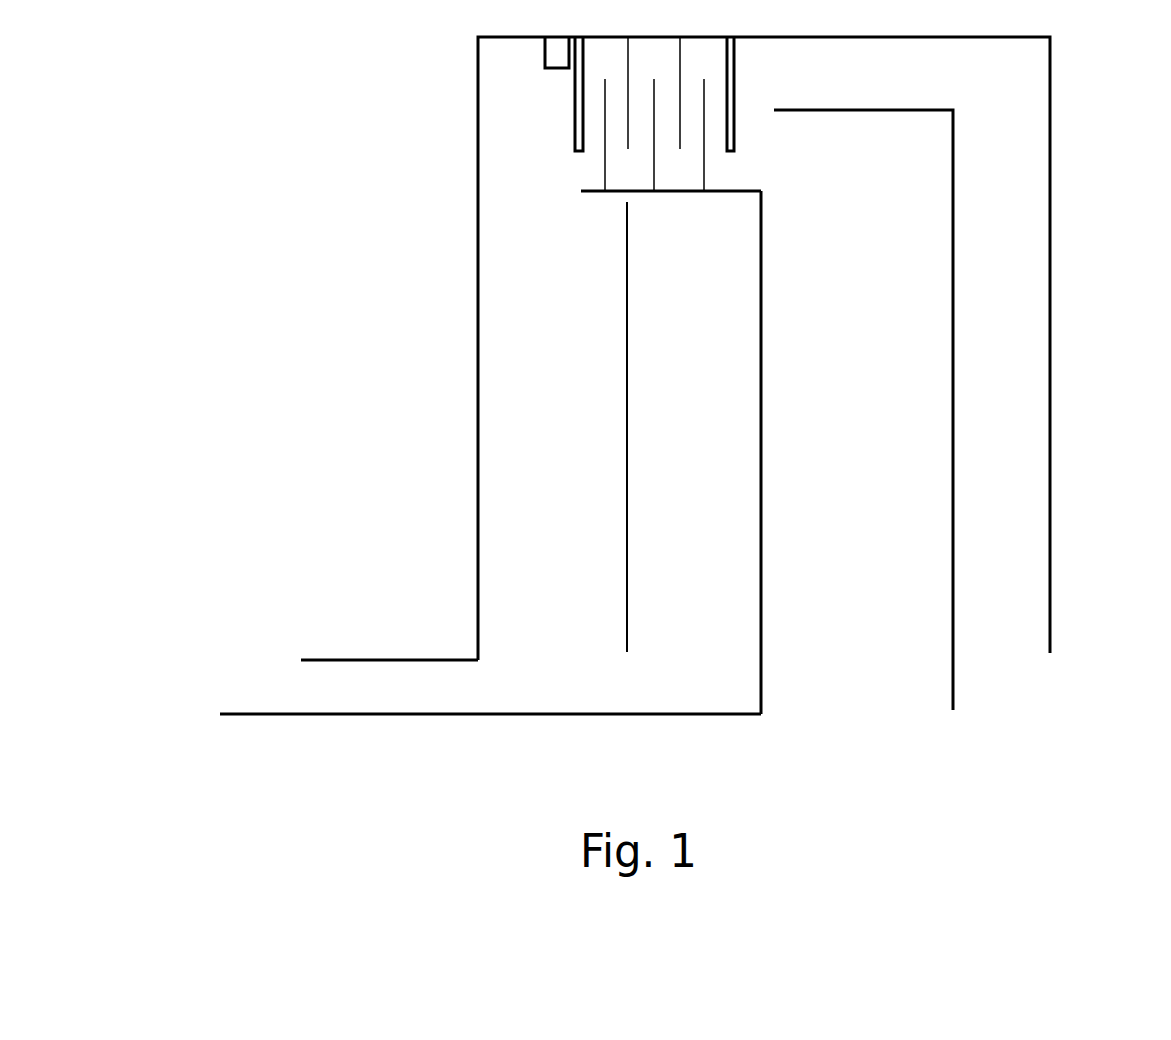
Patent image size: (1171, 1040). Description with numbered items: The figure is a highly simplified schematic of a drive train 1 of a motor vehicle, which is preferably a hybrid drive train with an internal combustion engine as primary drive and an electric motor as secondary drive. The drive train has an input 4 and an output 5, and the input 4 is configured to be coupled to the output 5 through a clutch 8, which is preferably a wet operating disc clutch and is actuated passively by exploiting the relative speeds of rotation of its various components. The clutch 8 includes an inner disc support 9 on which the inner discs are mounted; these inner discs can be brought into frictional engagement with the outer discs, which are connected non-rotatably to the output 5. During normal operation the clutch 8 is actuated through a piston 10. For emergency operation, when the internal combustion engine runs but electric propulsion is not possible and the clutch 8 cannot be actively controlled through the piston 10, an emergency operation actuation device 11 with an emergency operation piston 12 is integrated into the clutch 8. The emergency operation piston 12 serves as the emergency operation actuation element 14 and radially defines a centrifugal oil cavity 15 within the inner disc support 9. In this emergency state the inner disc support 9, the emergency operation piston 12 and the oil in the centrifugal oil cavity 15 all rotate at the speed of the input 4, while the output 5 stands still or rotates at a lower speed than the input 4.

The drive train 1 is at (1082, 181).
The input 4 is at (238, 714).
The output 5 is at (378, 660).
The clutch 8 is at (763, 136).
The inner disc support 9 is at (762, 428).
The piston 10 is at (953, 686).
The emergency operation actuation device 11 is at (591, 726).
The emergency operation piston 12 is at (626, 437).
The emergency operation actuation element 14 is at (641, 607).
The centrifugal oil cavity 15 is at (723, 331).